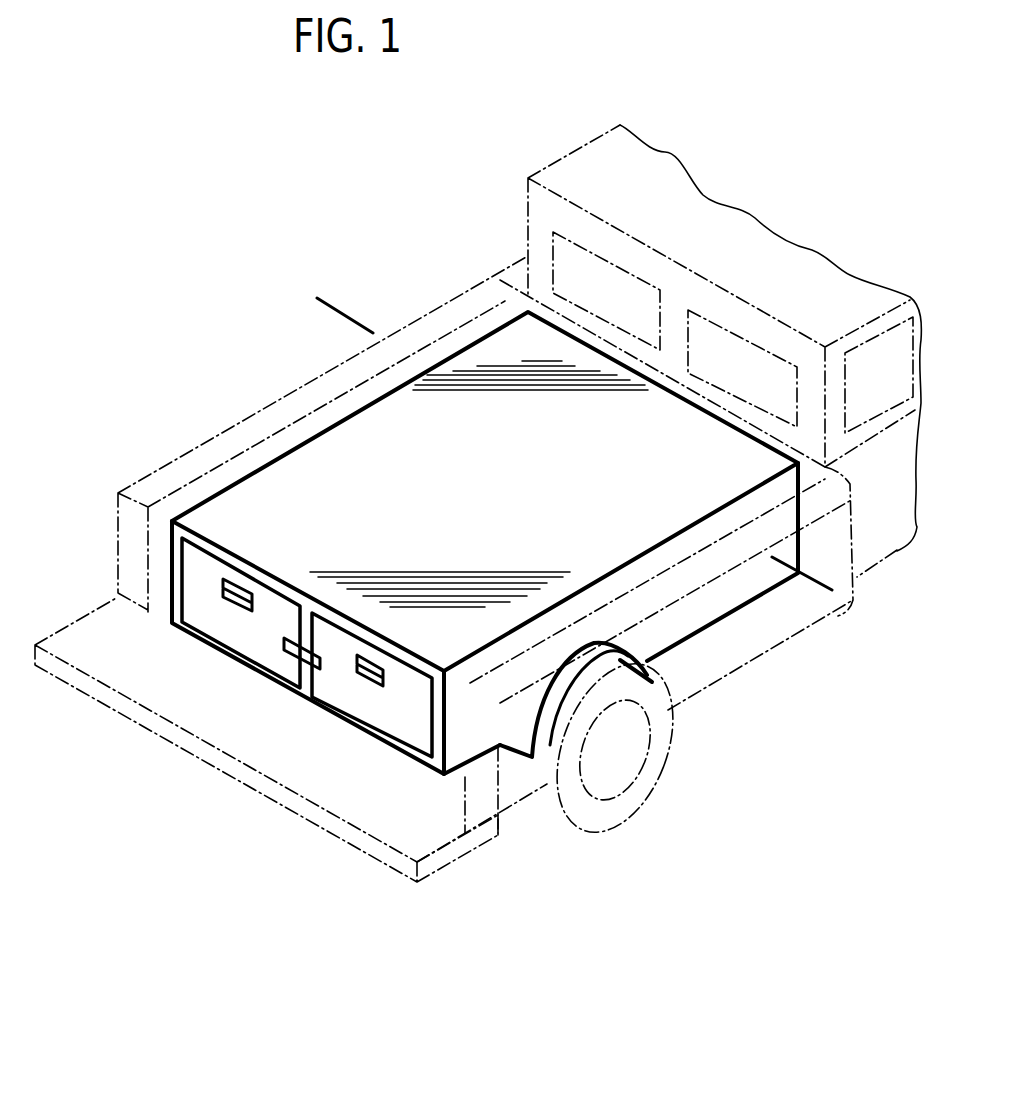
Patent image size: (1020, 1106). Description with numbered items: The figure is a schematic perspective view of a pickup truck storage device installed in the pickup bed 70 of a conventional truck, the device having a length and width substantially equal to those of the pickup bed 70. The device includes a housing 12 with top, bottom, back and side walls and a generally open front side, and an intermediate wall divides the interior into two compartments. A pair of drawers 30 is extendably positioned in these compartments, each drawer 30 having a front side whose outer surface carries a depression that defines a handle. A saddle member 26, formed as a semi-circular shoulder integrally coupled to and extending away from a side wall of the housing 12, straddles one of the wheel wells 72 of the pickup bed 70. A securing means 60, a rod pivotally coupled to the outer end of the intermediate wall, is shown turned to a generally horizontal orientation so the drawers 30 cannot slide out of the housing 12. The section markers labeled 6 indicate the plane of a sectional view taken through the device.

The housing 12 is at (170, 527).
The saddle member 26 is at (645, 668).
The drawer 30 is at (192, 607).
The securing means 60 is at (314, 663).
The pickup bed 70 is at (455, 775).
The wheel well 72 is at (548, 735).
The section line 6- 6 is at (822, 596).